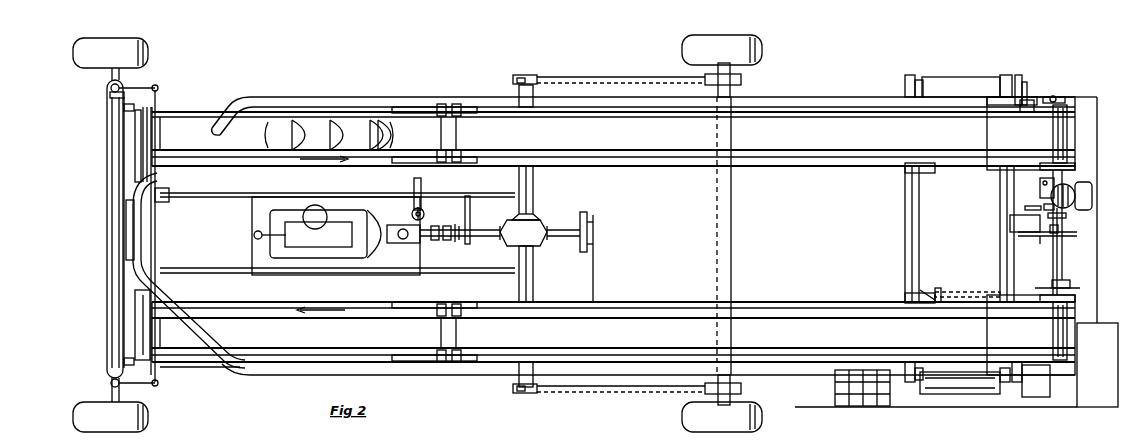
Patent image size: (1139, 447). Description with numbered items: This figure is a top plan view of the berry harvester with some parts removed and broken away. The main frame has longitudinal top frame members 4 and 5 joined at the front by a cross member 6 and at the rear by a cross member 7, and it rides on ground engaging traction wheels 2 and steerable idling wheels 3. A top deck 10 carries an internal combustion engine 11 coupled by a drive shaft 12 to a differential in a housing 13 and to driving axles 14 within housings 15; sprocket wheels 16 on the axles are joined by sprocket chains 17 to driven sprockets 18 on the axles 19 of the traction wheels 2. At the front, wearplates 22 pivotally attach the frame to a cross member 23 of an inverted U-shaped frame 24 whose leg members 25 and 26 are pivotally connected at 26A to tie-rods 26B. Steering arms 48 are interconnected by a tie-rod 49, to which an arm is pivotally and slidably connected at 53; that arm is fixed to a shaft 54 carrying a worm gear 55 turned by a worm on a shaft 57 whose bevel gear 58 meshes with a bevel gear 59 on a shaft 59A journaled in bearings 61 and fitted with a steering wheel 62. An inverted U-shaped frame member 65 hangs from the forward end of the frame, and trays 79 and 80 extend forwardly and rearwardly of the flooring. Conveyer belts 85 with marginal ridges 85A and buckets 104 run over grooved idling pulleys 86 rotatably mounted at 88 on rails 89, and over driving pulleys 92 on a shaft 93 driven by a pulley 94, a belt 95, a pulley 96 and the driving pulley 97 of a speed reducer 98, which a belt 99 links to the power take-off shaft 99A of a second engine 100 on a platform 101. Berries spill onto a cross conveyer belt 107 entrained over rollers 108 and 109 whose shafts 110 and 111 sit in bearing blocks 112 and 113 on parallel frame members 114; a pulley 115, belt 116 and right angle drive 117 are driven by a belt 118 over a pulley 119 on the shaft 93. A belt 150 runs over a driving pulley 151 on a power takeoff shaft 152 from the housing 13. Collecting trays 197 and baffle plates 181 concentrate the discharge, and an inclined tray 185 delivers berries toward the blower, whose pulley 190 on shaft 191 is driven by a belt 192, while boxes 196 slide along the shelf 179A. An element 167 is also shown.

The ground engaging traction wheels 2 is at (762, 48).
The steerable idling wheels 3 is at (148, 52).
The longitudinal top frame member 4 is at (350, 97).
The longitudinal top frame member 5 is at (300, 375).
The cross member 6 is at (133, 268).
The cross member 7 is at (733, 236).
The top deck 10 is at (659, 233).
The internal combustion engine 11 is at (325, 264).
The drive shaft 12 is at (478, 240).
The differential housing 13 is at (540, 220).
The driving axles 14 is at (527, 75).
The axle housings 15 is at (528, 190).
The sprocket wheels 16 is at (516, 78).
The sprocket chains 17 is at (645, 75).
The driven sprockets 18 is at (738, 80).
The axles of the traction wheels 19 is at (735, 70).
The wearplates 22 is at (126, 224).
The cross member 23 is at (112, 172).
The inverted U-shaped frame 24 is at (107, 122).
The leg member 25 is at (112, 93).
The leg member 26 is at (107, 375).
The pivotal connection 26A is at (124, 108).
The tie-rods 26B is at (238, 98).
The steering arms 48 is at (122, 87).
The tie-rod 49 is at (157, 98).
The pivotal and slidable connection 53 is at (155, 193).
The shaft 54 is at (200, 195).
The worm gear 55 is at (426, 188).
The shaft 57 is at (412, 213).
The bevel gear 58 is at (422, 210).
The bevel gear 59 is at (434, 240).
The shaft 59A is at (447, 240).
The bearings 61 is at (457, 241).
The steering wheel 62 is at (471, 224).
The inverted U-shaped frame member 65 is at (135, 310).
The tray 79 is at (136, 135).
The tray 80 is at (190, 369).
The conveyer belts 85 is at (617, 283).
The ridges 85A is at (280, 151).
The grooved idling pulleys 86 is at (441, 104).
The pulley mountings 88 is at (457, 104).
The rails 89 is at (400, 107).
The driving pulleys 92 is at (1068, 150).
The shaft 93 is at (1052, 258).
The pulley 94 is at (1068, 236).
The belt 95 is at (1046, 241).
The pulley 96 is at (1029, 243).
The driving pulley 97 is at (1025, 208).
The speed reducer 98 is at (1010, 232).
The belt 99 is at (1044, 206).
The power take-off shaft 99A is at (1062, 278).
The internal combustion engine 100 is at (1080, 196).
The platform 101 is at (1100, 212).
The buckets 104 is at (380, 133).
The cross conveyer belt 107 is at (960, 243).
The roller 108 is at (1005, 75).
The roller 109 is at (1002, 384).
The shaft 110 is at (905, 80).
The shaft 111 is at (1032, 375).
The bearing block 112 is at (1019, 75).
The bearing block 113 is at (910, 395).
The parallel frame members 114 is at (905, 196).
The pulley 115 is at (1028, 80).
The belt 116 is at (1020, 97).
The right angle drive 117 is at (1026, 114).
The belt 118 is at (1050, 97).
The pulley 119 is at (1058, 98).
The belt 150 is at (594, 275).
The driving pulley 151 is at (590, 226).
The power takeoff shaft 152 is at (565, 238).
The end bracket 167 is at (1040, 398).
The shelf 179A is at (798, 408).
The baffle plates 181 is at (925, 174).
The inclined tray 185 is at (962, 394).
The pulley 190 is at (942, 292).
The shaft 191 is at (945, 292).
The belt 192 is at (965, 292).
The boxes 196 is at (853, 408).
The collecting trays 197 is at (1078, 110).